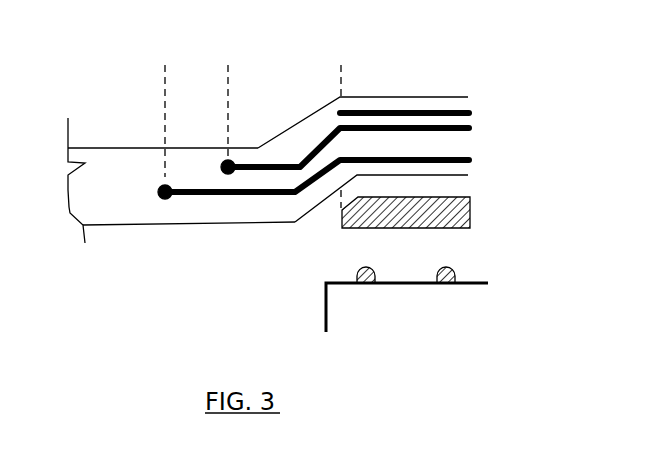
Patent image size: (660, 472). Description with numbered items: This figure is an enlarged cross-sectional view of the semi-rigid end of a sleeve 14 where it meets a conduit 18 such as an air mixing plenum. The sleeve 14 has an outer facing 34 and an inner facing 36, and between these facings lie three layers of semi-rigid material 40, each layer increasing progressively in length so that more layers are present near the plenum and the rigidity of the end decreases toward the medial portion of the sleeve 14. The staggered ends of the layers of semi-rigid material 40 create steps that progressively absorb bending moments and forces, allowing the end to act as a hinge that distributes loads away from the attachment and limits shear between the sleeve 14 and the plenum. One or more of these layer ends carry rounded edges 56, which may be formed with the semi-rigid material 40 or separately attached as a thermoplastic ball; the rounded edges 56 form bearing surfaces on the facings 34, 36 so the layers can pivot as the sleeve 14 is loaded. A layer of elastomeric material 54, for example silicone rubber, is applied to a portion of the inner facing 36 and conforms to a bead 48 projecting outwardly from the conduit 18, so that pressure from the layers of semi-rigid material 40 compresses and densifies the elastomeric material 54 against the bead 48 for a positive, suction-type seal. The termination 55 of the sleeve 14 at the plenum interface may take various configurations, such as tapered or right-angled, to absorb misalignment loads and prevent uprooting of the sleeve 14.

The sleeve 14 is at (133, 148).
The outer facing 34 is at (462, 95).
The inner facing 36 is at (468, 176).
The semi-rigid material 40 is at (472, 113).
The rounded edges 56 is at (228, 167).
The elastomeric material 54 is at (470, 218).
The termination 55 is at (310, 210).
The bead 48 is at (357, 275).
The conduit 18 is at (393, 283).